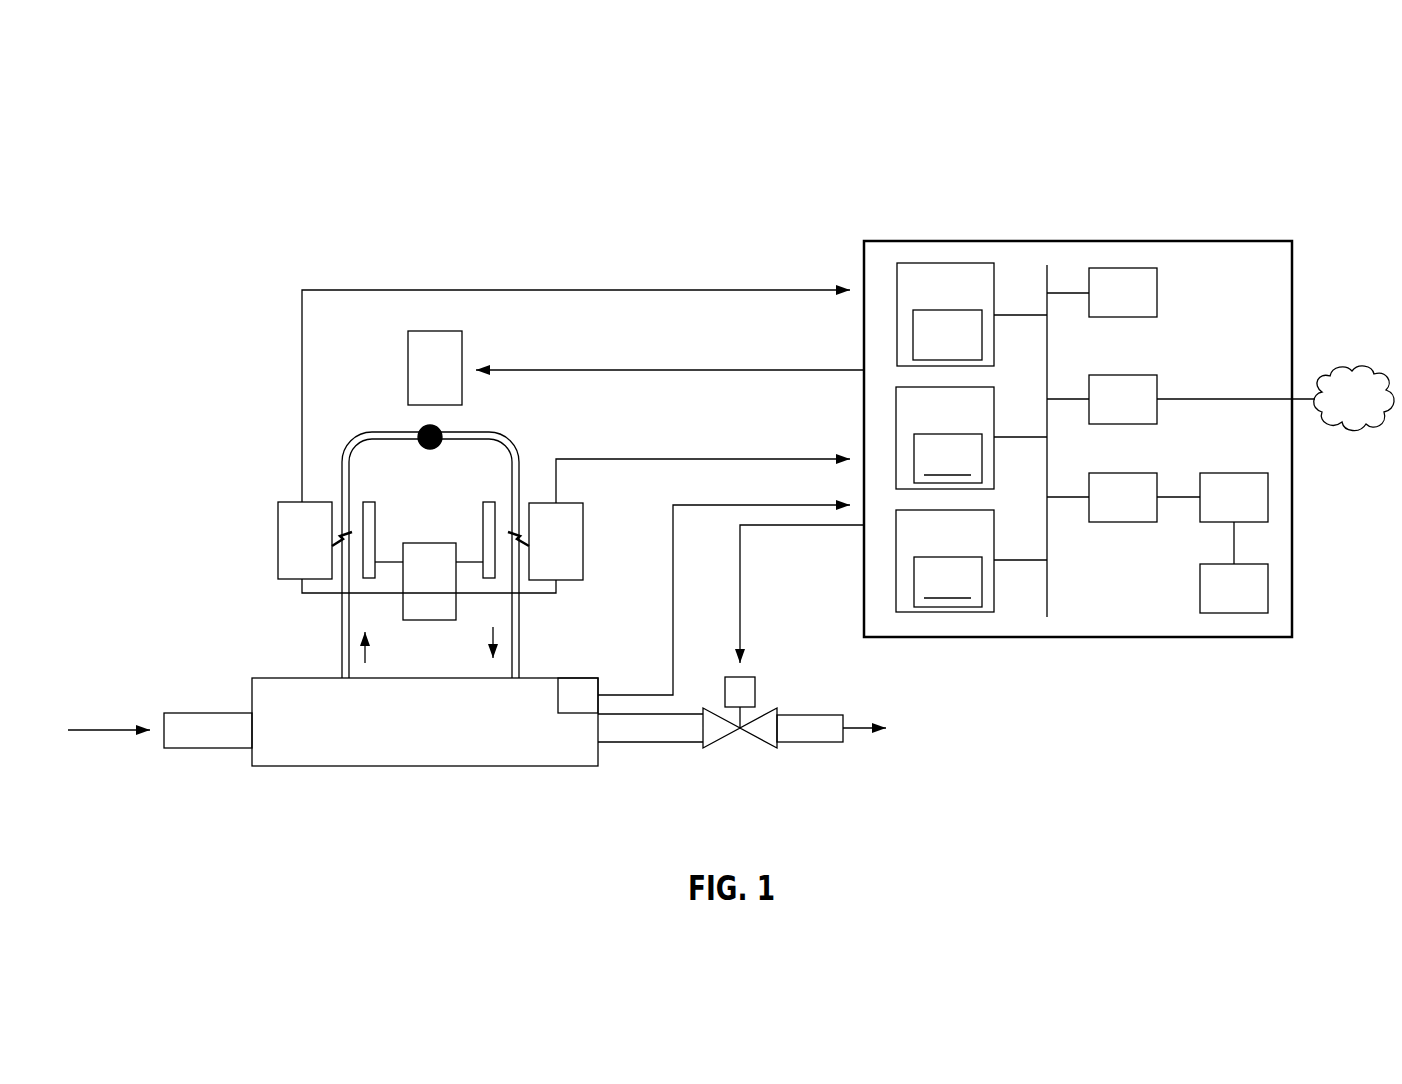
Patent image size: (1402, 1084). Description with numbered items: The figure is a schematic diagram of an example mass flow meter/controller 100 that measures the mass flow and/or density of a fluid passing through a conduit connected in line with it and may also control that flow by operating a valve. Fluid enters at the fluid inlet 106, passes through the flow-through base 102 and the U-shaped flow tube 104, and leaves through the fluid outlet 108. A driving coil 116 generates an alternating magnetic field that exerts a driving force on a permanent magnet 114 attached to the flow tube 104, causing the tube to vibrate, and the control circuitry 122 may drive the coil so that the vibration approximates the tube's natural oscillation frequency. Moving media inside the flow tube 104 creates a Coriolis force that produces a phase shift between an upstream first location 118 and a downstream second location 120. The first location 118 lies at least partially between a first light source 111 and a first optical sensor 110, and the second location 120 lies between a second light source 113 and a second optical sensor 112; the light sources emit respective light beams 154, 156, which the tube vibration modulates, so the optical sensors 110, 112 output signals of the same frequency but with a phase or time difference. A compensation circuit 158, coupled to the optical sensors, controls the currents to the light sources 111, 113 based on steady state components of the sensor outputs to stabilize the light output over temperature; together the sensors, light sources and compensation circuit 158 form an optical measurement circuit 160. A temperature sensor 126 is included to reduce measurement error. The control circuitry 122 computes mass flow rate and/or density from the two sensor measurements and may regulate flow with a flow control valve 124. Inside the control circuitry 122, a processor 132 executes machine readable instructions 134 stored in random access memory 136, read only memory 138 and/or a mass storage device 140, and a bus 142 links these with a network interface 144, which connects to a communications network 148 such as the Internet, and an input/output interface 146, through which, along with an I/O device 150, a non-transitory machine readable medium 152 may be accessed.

The mass flow meter/controller 100 is at (224, 137).
The flow-through base 102 is at (298, 677).
The flow tube 104 is at (342, 628).
The fluid inlet 106 is at (187, 713).
The fluid outlet 108 is at (818, 715).
The first optical sensor 110 is at (278, 540).
The first light source 111 is at (377, 523).
The second optical sensor 112 is at (583, 540).
The second light source 113 is at (482, 550).
The permanent magnet 114 is at (421, 430).
The driving coil 116 is at (408, 368).
The first location 118 is at (356, 504).
The second location 120 is at (508, 497).
The control circuitry 122 is at (937, 241).
The flow control valve 124 is at (720, 712).
The temperature sensor 126 is at (578, 683).
The processor 132 is at (969, 549).
The machine readable instructions 134 is at (971, 351).
The random access memory 136 is at (970, 302).
The read only memory 138 is at (969, 426).
The mass storage device 140 is at (1146, 307).
The bus 142 is at (1047, 468).
The network interface 144 is at (1146, 414).
The input/output interface 146 is at (1146, 512).
The communications network 148 is at (1380, 414).
The I/O device 150 is at (1257, 512).
The non-transitory machine readable medium 152 is at (1257, 603).
The first light beam 154 is at (338, 540).
The second light beam 156 is at (523, 540).
The compensation circuit 158 is at (447, 620).
The optical measurement circuit 160 is at (283, 458).